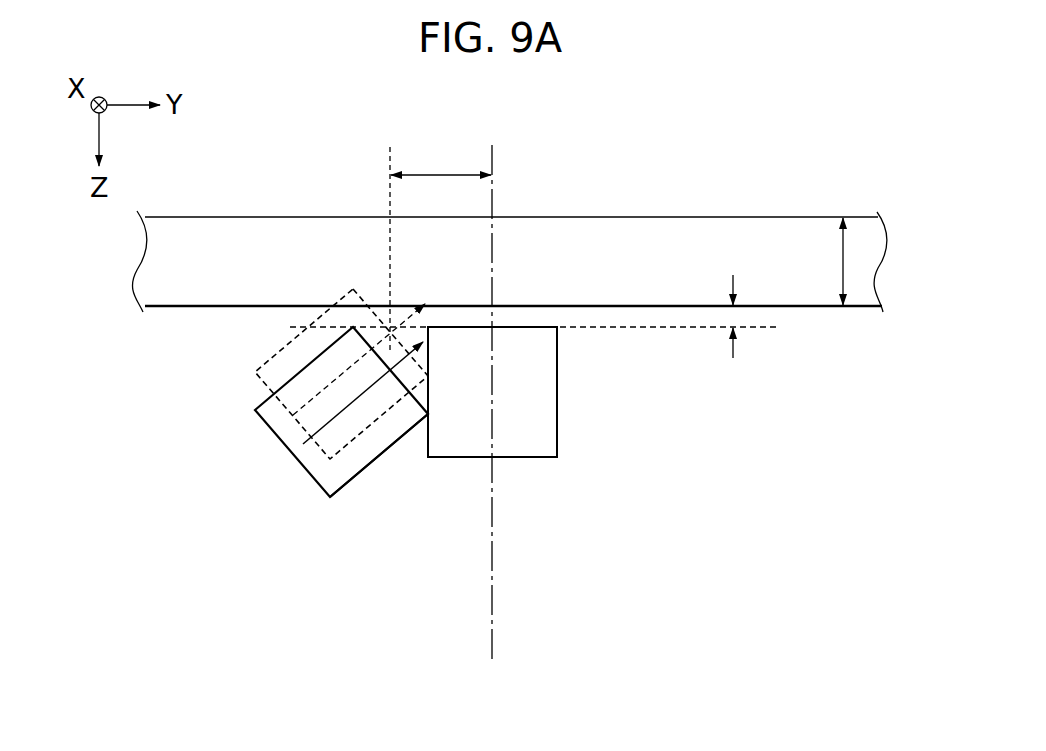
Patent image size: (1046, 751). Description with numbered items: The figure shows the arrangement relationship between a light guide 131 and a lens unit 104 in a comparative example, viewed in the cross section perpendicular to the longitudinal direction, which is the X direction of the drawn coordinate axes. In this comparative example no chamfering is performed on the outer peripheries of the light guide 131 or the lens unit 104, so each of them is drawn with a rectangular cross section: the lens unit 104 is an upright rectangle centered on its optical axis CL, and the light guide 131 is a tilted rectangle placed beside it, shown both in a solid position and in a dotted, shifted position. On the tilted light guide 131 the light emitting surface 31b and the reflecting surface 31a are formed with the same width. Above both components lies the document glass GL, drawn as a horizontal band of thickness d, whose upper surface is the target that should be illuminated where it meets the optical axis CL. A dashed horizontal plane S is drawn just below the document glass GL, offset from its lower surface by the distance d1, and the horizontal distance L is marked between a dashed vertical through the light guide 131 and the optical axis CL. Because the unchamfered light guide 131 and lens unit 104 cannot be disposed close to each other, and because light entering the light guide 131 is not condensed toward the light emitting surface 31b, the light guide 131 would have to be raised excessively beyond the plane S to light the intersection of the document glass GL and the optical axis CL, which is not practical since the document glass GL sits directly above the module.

The document glass GL is at (866, 262).
The optical axis CL is at (495, 152).
The distance L is at (440, 248).
The thickness d is at (831, 261).
The distance d1 is at (736, 316).
The plane S is at (655, 327).
The lens unit 104 is at (547, 442).
The light guide 131 is at (283, 364).
The reflecting surface 31a is at (280, 432).
The light emitting surface 31b is at (423, 395).